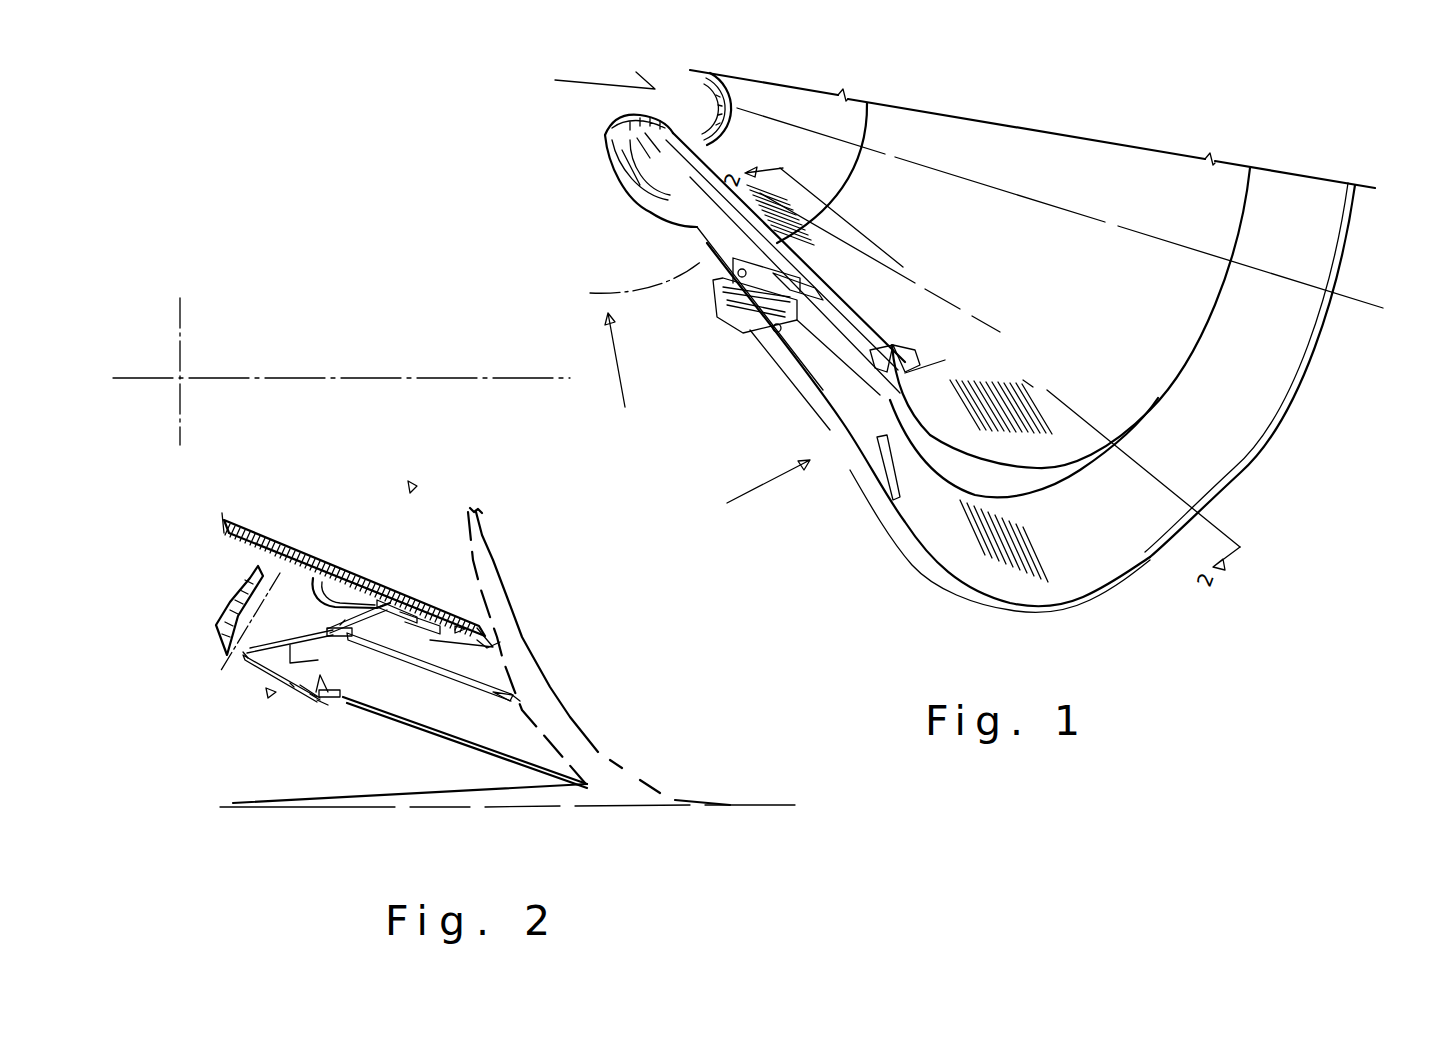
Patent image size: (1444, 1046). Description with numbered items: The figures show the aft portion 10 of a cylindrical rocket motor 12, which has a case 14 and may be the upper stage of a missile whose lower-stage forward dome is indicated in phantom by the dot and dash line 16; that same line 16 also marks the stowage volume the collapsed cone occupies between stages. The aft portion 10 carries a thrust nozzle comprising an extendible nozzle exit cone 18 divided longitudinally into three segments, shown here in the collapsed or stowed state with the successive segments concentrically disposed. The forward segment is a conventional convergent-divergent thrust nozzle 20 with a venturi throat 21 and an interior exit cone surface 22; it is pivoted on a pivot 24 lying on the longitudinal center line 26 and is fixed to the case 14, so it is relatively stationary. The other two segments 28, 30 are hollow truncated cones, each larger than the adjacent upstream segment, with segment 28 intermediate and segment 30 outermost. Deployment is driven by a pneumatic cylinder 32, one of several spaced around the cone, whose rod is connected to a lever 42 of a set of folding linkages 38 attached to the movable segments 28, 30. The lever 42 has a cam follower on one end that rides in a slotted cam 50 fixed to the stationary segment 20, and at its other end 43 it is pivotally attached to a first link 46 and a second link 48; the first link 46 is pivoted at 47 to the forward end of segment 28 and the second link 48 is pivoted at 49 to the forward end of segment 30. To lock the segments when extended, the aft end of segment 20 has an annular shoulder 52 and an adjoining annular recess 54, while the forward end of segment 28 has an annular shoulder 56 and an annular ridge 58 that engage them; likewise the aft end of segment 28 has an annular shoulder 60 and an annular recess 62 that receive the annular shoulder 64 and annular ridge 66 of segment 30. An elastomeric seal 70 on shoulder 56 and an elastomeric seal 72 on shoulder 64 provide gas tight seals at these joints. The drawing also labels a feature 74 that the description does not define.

In FIG. 1, the aft portion 10 is at (755, 486).
In FIG. 2, the aft portion 10 is at (410, 493).
In FIG. 1, the rocket motor 12 is at (621, 372).
In FIG. 1, the case 14 is at (637, 290).
In FIG. 2, the dot and dash line 16 is at (588, 733).
In FIG. 1, the extendible nozzle exit cone 18 is at (1362, 207).
In FIG. 2, the extendible nozzle exit cone 18 is at (495, 667).
In FIG. 1, the thrust nozzle 20 is at (773, 283).
In FIG. 2, the thrust nozzle 20 is at (282, 550).
In FIG. 1, the venturi throat 21 is at (675, 117).
In FIG. 1, the interior exit cone surface 22 is at (1052, 269).
In FIG. 2, the interior exit cone surface 22 is at (240, 522).
In FIG. 1, the pivot 24 is at (589, 79).
In FIG. 2, the pivot 24 is at (178, 378).
In FIG. 1, the longitudinal center line 26 is at (1013, 192).
In FIG. 2, the longitudinal center line 26 is at (318, 378).
In FIG. 1, the segment 28 is at (837, 323).
In FIG. 2, the segment 28 is at (423, 668).
In FIG. 1, the segment 30 is at (947, 567).
In FIG. 2, the segment 30 is at (420, 726).
In FIG. 2, the pneumatic cylinder 32 is at (327, 590).
In FIG. 2, the set of linkages 38 is at (268, 698).
In FIG. 2, the lever 42 is at (307, 632).
In FIG. 2, the other end 43 is at (247, 653).
In FIG. 2, the first link 46 is at (290, 650).
In FIG. 2, the pivot 47 is at (323, 660).
In FIG. 2, the second link 48 is at (290, 683).
In FIG. 2, the pivot 49 is at (320, 704).
In FIG. 2, the slotted cam 50 is at (423, 630).
In FIG. 1, the annular shoulder 52 is at (910, 373).
In FIG. 2, the annular shoulder 52 is at (487, 648).
In FIG. 1, the annular recess 54 is at (885, 350).
In FIG. 2, the annular recess 54 is at (433, 643).
In FIG. 2, the annular shoulder 56 is at (430, 633).
In FIG. 2, the annular ridge 58 is at (335, 626).
In FIG. 1, the annular shoulder 60 is at (870, 348).
In FIG. 2, the annular shoulder 60 is at (508, 693).
In FIG. 1, the annular recess 62 is at (867, 360).
In FIG. 2, the annular recess 62 is at (502, 695).
In FIG. 2, the annular shoulder 64 is at (340, 685).
In FIG. 2, the annular ridge 66 is at (317, 698).
In FIG. 2, the elastomeric seal 70 is at (340, 625).
In FIG. 2, the elastomeric seal 72 is at (327, 678).
In FIG. 2, the base strip 74 is at (533, 785).